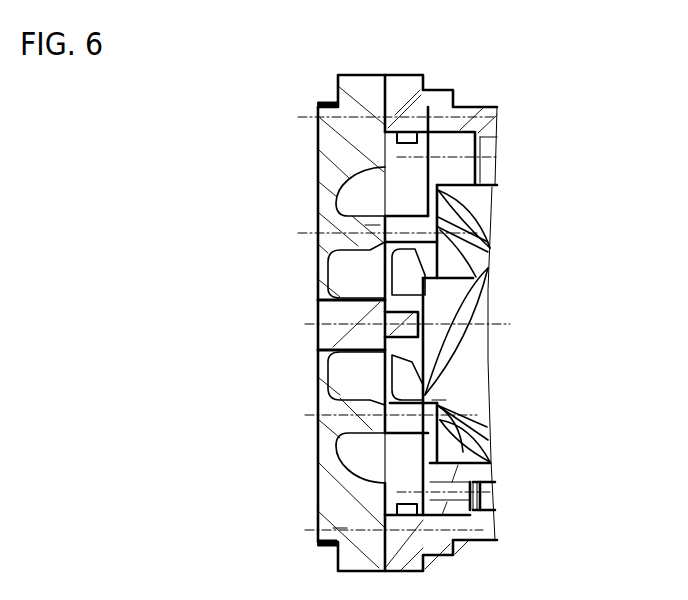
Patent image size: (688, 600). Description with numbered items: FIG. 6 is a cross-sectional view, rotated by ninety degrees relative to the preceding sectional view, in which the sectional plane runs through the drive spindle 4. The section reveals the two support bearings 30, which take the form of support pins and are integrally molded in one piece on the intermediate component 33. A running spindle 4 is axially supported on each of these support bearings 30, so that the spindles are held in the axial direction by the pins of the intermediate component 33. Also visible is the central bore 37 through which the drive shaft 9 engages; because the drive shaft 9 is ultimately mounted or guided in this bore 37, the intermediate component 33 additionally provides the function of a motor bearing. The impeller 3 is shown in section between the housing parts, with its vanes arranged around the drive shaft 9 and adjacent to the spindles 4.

The impeller 3 is at (478, 333).
The drive spindle 4 is at (489, 230).
The drive shaft 9 is at (340, 313).
The support bearing 30 is at (373, 225).
The intermediate component 33 is at (337, 142).
The central bore 37 is at (340, 352).